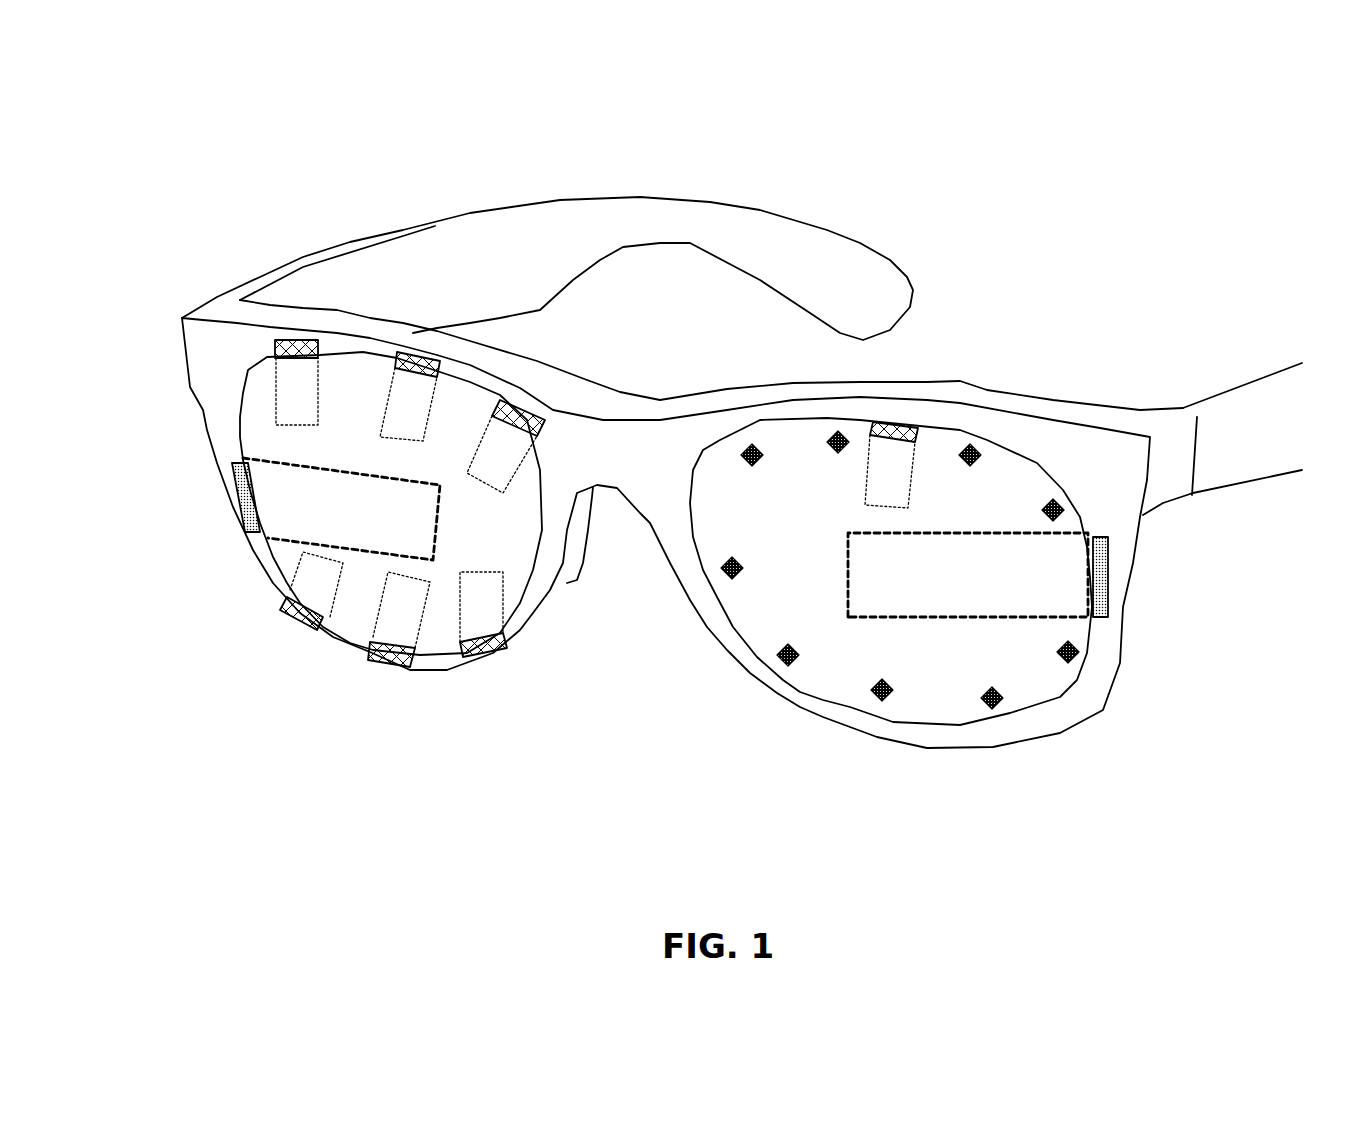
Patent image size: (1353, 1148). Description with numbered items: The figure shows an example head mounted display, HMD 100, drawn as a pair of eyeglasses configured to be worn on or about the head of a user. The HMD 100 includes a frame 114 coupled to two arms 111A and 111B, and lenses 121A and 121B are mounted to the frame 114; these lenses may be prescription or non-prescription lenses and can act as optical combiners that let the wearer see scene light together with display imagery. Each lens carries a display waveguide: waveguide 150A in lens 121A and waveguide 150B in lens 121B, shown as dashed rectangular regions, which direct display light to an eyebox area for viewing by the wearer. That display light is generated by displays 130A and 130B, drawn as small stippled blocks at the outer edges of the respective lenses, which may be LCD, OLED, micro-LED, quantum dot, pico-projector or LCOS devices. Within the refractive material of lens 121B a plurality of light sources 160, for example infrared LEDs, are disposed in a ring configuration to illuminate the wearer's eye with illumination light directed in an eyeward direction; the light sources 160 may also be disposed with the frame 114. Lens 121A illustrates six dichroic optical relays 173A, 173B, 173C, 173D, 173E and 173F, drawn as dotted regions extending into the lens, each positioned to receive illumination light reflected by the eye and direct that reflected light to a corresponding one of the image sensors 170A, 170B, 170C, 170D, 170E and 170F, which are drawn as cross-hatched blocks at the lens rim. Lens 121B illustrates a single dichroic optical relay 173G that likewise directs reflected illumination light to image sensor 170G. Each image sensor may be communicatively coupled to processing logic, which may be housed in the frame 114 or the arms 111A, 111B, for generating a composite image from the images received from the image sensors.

The head mounted display 100 is at (1180, 67).
The arm 111A is at (530, 284).
The arm 111B is at (1270, 452).
The frame 114 is at (233, 362).
The lens 121A is at (512, 544).
The lens 121B is at (825, 599).
The display 130A is at (247, 505).
The display 130B is at (1108, 578).
The display waveguide 150A is at (243, 458).
The display waveguide 150B is at (915, 530).
The light sources 160 is at (826, 458).
The image sensor 170A is at (278, 340).
The image sensor 170B is at (403, 353).
The image sensor 170C is at (530, 410).
The image sensor 170D is at (303, 625).
The image sensor 170E is at (392, 660).
The image sensor 170F is at (489, 650).
The image sensor 170G is at (913, 423).
The dichroic optical relay 173A is at (288, 426).
The dichroic optical relay 173B is at (380, 438).
The dichroic optical relay 173C is at (477, 477).
The dichroic optical relay 173D is at (297, 570).
The dichroic optical relay 173E is at (377, 612).
The dichroic optical relay 173F is at (503, 595).
The dichroic optical relay 173G is at (917, 450).